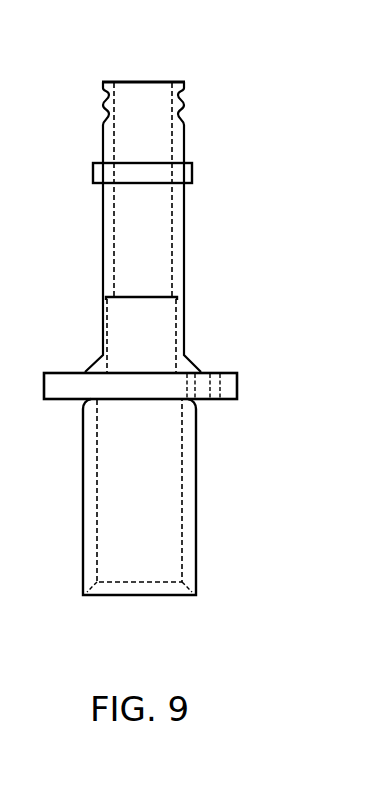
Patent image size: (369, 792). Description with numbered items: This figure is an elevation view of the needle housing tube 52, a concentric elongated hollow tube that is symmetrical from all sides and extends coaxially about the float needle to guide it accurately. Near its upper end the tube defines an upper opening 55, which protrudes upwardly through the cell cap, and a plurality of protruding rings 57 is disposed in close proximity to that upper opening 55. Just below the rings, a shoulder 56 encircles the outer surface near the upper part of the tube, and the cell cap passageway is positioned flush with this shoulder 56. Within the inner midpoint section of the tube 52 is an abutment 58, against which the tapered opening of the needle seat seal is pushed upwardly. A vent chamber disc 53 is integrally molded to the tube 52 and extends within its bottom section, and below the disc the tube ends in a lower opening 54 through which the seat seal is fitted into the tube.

The needle housing tube 52 is at (274, 312).
The vent chamber disc 53 is at (238, 390).
The lower opening 54 is at (132, 597).
The upper opening 55 is at (148, 81).
The shoulder 56 is at (192, 175).
The protruding rings 57 is at (184, 110).
The abutment 58 is at (143, 296).